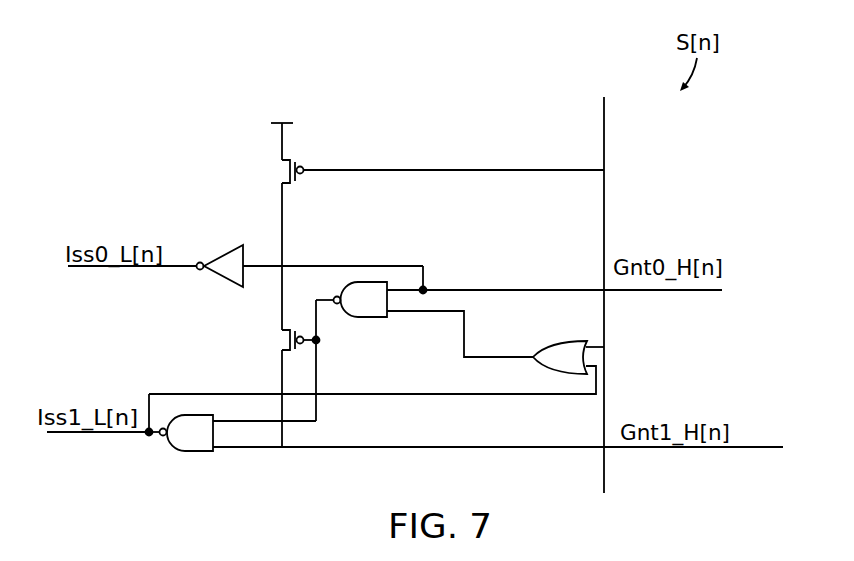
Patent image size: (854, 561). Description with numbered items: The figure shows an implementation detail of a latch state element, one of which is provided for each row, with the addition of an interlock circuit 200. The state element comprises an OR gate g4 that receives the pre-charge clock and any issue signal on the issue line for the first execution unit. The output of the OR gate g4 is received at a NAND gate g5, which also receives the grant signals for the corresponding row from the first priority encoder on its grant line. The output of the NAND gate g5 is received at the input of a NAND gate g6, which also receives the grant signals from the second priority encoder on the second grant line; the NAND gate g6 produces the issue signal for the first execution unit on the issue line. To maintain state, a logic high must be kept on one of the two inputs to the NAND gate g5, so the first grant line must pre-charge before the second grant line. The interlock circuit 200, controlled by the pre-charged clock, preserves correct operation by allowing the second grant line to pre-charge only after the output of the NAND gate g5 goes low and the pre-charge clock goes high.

The interlock circuit 200 is at (322, 141).
The OR gate g4 is at (560, 357).
The NAND gate g5 is at (361, 299).
The NAND gate g6 is at (187, 433).